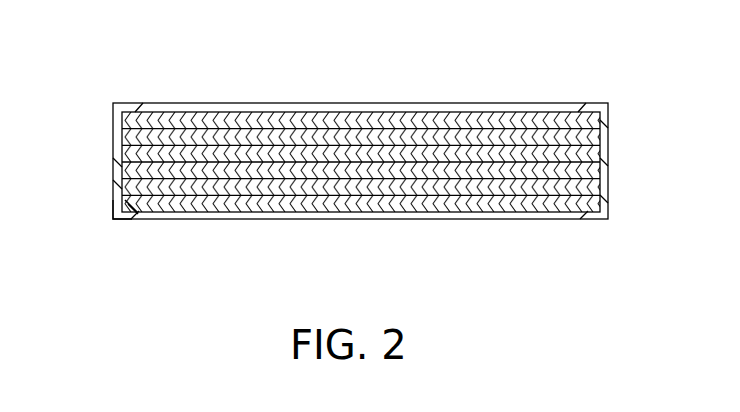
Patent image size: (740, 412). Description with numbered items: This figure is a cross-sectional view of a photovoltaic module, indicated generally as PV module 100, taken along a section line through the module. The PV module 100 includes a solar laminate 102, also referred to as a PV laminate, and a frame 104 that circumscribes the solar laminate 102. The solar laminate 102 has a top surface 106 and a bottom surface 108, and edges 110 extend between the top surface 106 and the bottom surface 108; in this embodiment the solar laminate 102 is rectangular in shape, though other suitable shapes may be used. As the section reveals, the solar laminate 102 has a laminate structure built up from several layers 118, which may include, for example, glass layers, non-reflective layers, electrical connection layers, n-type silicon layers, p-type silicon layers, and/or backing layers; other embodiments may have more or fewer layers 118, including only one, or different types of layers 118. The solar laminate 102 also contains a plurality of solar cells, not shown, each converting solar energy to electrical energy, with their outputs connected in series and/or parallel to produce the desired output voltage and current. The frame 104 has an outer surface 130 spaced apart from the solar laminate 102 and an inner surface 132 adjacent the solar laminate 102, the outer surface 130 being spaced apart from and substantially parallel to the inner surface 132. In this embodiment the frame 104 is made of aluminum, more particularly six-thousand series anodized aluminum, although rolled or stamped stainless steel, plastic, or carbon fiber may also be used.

The PV module 100 is at (156, 59).
The solar laminate 102 is at (456, 200).
The frame 104 is at (113, 106).
The top surface 106 is at (392, 111).
The bottom surface 108 is at (371, 213).
The edges 110 is at (113, 167).
The layers 118 is at (140, 198).
The outer surface 130 is at (112, 208).
The inner surface 132 is at (140, 222).